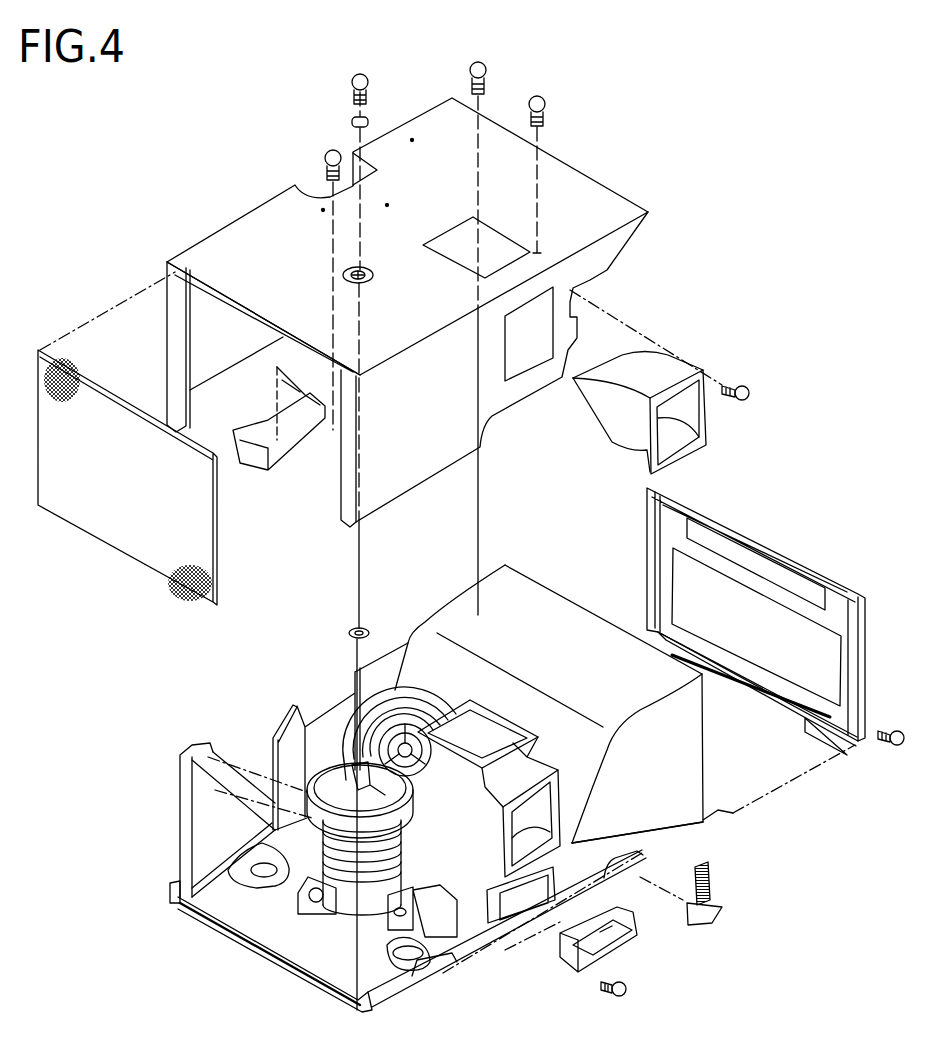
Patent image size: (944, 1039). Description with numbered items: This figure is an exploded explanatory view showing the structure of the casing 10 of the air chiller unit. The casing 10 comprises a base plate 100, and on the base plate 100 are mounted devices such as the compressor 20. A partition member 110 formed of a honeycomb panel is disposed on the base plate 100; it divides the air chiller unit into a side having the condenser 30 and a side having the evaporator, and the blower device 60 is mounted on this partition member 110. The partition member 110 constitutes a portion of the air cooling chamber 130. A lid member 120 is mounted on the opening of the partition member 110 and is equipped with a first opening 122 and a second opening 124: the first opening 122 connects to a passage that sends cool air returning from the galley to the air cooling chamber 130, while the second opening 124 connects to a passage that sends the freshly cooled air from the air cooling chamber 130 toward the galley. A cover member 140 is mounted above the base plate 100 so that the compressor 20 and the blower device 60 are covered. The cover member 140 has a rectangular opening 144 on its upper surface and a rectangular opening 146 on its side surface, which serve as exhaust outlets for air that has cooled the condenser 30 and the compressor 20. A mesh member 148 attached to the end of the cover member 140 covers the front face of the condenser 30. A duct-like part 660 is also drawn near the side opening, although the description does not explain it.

The casing 10 is at (662, 232).
The compressor 20 is at (293, 781).
The condenser 30 is at (207, 797).
The blower device 60 is at (455, 665).
The base plate 100 is at (470, 947).
The partition member 110 is at (549, 716).
The lid member 120 is at (756, 631).
The first opening 122 is at (797, 663).
The second opening 124 is at (717, 543).
The air cooling chamber 130 is at (610, 610).
The cover member 140 is at (381, 312).
The rectangular opening 144 is at (507, 253).
The rectangular opening 146 is at (534, 311).
The mesh member 148 is at (185, 595).
The exhaust duct 660 is at (658, 367).